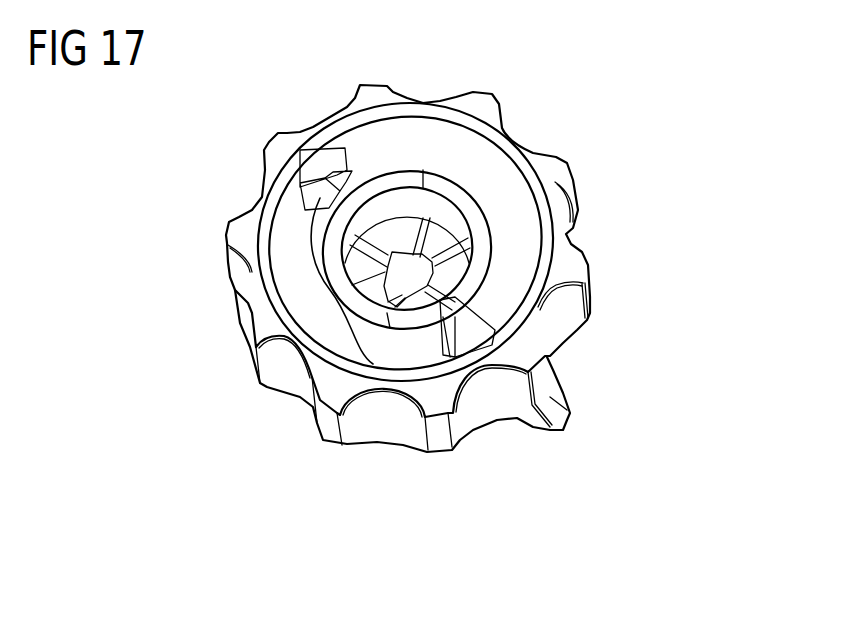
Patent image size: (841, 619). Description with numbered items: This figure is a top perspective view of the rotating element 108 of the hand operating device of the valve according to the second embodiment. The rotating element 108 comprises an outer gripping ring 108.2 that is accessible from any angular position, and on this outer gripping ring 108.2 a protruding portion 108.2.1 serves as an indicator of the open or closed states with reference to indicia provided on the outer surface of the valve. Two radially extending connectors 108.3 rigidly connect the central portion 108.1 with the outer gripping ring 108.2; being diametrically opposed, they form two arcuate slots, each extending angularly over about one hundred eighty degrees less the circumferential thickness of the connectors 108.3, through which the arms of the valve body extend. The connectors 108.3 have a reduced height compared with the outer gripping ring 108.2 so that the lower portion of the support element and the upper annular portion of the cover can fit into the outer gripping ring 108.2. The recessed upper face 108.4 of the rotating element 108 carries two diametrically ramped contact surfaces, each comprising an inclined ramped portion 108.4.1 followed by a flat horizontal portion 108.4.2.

The rotating element 108 is at (613, 128).
The central portion 108.1 is at (390, 175).
The outer gripping ring 108.2 is at (243, 233).
The protruding portion 108.2.1 is at (573, 417).
The radially extending connectors 108.3 is at (328, 178).
The recessed upper face 108.4 is at (400, 233).
The inclined ramped portion 108.4.1 is at (445, 232).
The flat horizontal portion 108.4.2 is at (455, 266).